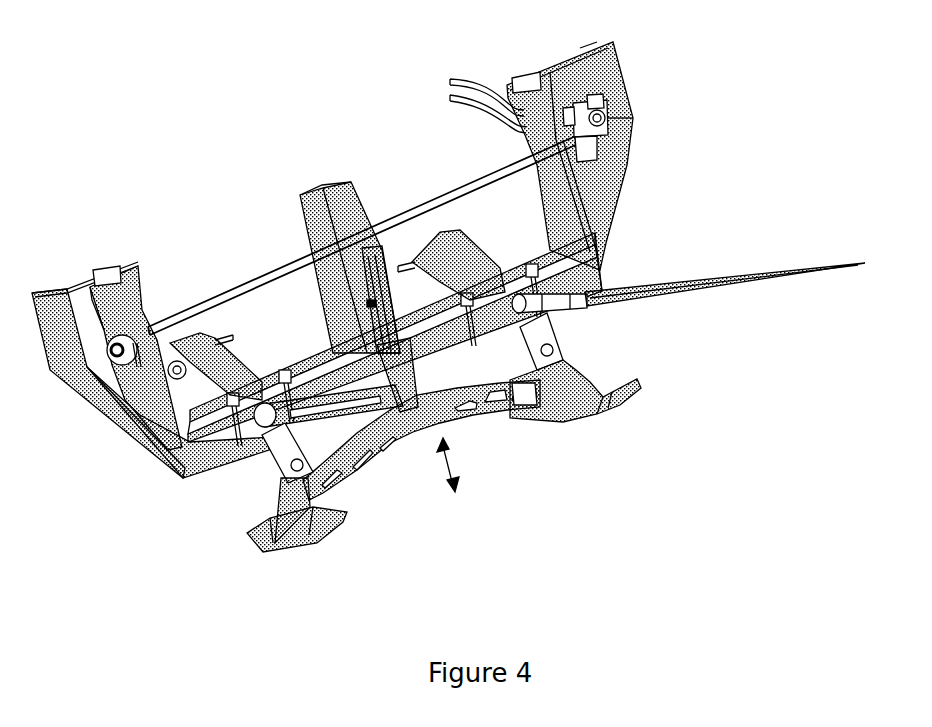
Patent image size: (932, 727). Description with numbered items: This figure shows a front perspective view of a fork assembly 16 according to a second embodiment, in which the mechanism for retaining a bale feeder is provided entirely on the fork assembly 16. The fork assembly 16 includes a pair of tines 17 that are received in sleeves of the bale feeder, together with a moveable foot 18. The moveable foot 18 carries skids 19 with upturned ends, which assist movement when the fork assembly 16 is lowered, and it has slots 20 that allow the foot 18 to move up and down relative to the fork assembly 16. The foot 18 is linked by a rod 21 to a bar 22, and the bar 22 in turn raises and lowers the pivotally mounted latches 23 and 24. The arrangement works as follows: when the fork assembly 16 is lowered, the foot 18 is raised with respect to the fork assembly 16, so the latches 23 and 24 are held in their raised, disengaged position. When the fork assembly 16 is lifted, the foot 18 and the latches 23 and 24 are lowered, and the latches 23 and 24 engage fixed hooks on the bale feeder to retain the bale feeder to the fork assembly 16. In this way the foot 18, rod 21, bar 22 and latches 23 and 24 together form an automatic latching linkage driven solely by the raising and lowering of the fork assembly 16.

The fork assembly 16 is at (725, 135).
The tines 17 is at (562, 361).
The moveable foot 18 is at (400, 425).
The skids 19 is at (323, 527).
The slots 20 is at (305, 493).
The rod 21 is at (367, 277).
The bar 22 is at (243, 279).
The latch 23 is at (131, 353).
The latch 24 is at (596, 148).